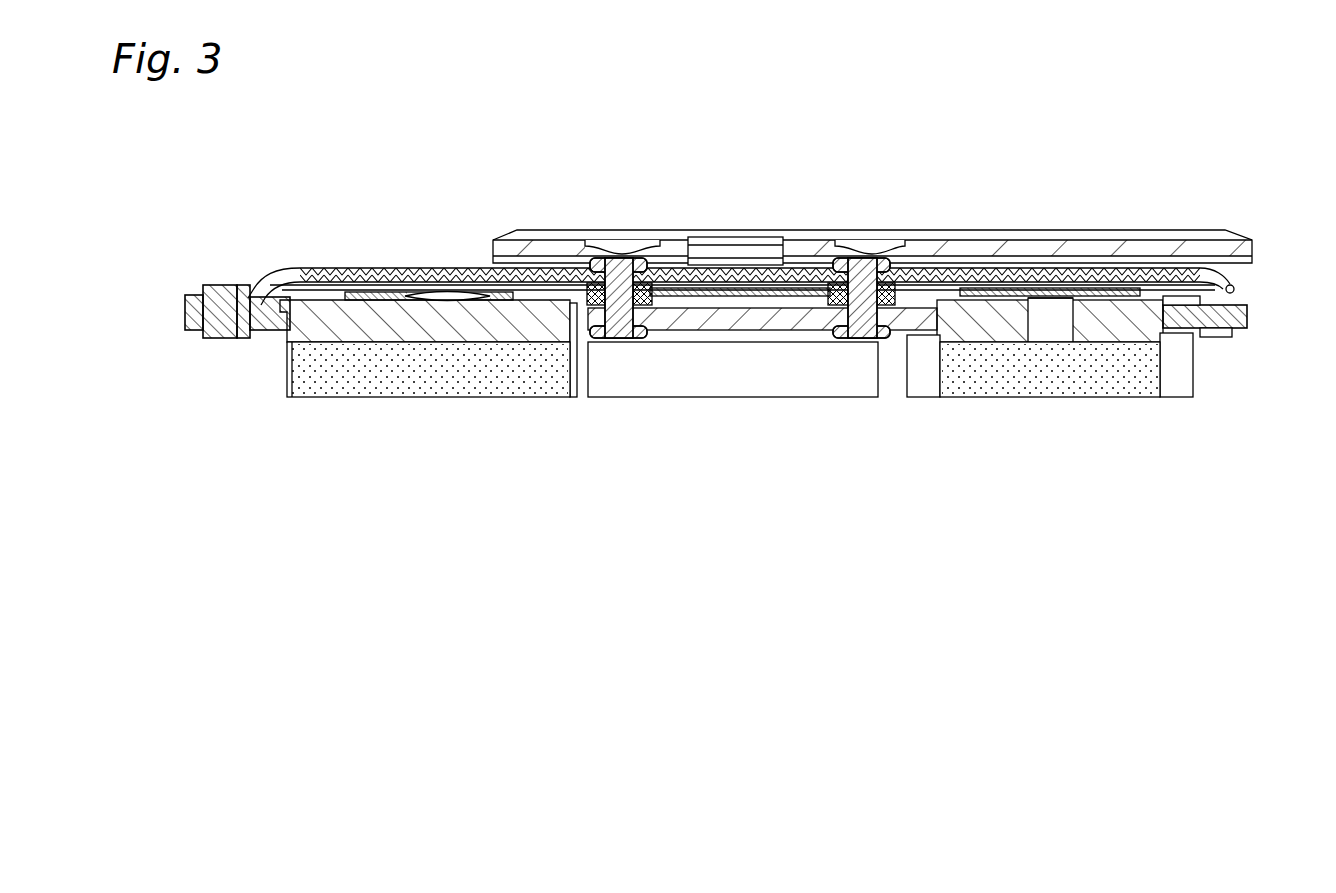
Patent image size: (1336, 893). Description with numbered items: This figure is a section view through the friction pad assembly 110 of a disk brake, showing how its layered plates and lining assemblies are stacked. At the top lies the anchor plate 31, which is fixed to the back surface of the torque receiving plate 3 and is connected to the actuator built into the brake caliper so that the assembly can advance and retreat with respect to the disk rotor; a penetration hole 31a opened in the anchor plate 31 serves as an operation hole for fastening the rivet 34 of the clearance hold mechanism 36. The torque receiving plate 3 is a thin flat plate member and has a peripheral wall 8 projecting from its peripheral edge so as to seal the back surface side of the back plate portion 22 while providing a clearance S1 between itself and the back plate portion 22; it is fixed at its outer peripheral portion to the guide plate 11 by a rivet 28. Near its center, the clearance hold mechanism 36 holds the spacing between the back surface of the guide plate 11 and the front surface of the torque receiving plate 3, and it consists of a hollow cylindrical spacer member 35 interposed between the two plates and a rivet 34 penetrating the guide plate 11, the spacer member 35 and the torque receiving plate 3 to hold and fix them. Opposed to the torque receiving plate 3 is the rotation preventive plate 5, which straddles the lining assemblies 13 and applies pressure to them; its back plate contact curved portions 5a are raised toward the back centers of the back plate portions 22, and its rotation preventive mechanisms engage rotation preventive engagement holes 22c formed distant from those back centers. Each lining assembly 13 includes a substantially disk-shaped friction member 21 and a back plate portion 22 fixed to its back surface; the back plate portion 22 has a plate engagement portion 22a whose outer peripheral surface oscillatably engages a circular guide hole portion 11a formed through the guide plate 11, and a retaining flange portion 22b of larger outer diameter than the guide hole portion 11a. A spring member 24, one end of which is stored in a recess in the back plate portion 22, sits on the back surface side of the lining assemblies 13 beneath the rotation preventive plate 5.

The friction pad assembly 110 is at (1225, 209).
The anchor plate 31 is at (536, 232).
The penetration hole 31a is at (583, 247).
The torque receiving plate 3 is at (462, 266).
The rotation preventive plate 5 is at (1007, 274).
The clearance S1 is at (330, 291).
The spring member 24 is at (373, 292).
The back plate contact curved portion 5a is at (427, 301).
The guide plate 11 is at (185, 331).
The rivet 28 is at (232, 285).
The peripheral wall 8 is at (243, 285).
The back plate portion 22 is at (520, 329).
The plate engagement portion 22a is at (278, 340).
The retaining flange portion 22b is at (262, 339).
The rotation preventive engagement hole 22c is at (1028, 324).
The guide hole portion 11a is at (557, 340).
The friction member 21 is at (370, 380).
The lining assembly 13 is at (398, 400).
The rivet 34 is at (618, 321).
The spacer member 35 is at (648, 319).
The clearance hold mechanism 36 is at (682, 497).